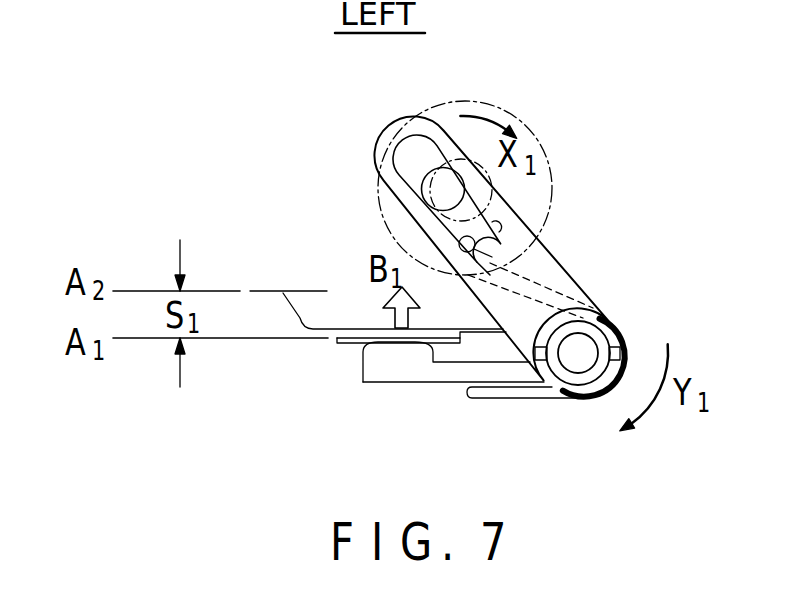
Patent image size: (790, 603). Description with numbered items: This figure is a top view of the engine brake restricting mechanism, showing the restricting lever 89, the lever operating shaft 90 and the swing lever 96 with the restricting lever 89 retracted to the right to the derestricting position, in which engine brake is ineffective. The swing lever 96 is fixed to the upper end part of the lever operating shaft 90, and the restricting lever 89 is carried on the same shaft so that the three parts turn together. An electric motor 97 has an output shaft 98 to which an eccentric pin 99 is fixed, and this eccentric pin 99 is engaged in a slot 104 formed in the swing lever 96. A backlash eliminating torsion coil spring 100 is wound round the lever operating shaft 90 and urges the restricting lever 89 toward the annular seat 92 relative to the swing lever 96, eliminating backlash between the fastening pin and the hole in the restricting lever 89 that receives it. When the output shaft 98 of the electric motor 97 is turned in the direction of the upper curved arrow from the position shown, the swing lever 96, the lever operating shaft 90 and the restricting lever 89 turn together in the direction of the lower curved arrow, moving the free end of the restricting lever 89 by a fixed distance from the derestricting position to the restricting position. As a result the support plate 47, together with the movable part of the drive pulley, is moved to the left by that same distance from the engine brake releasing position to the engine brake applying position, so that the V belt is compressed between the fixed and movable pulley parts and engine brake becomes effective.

The support plate 47 is at (307, 308).
The restricting lever 89 is at (443, 377).
The lever operating shaft 90 is at (588, 348).
The annular seat 92 is at (340, 342).
The swing lever 96 is at (565, 266).
The electric motor 97 is at (380, 217).
The output shaft 98 is at (492, 190).
The eccentric pin 99 is at (432, 175).
The backlash eliminating torsion coil spring 100 is at (517, 398).
The slot 104 is at (496, 227).